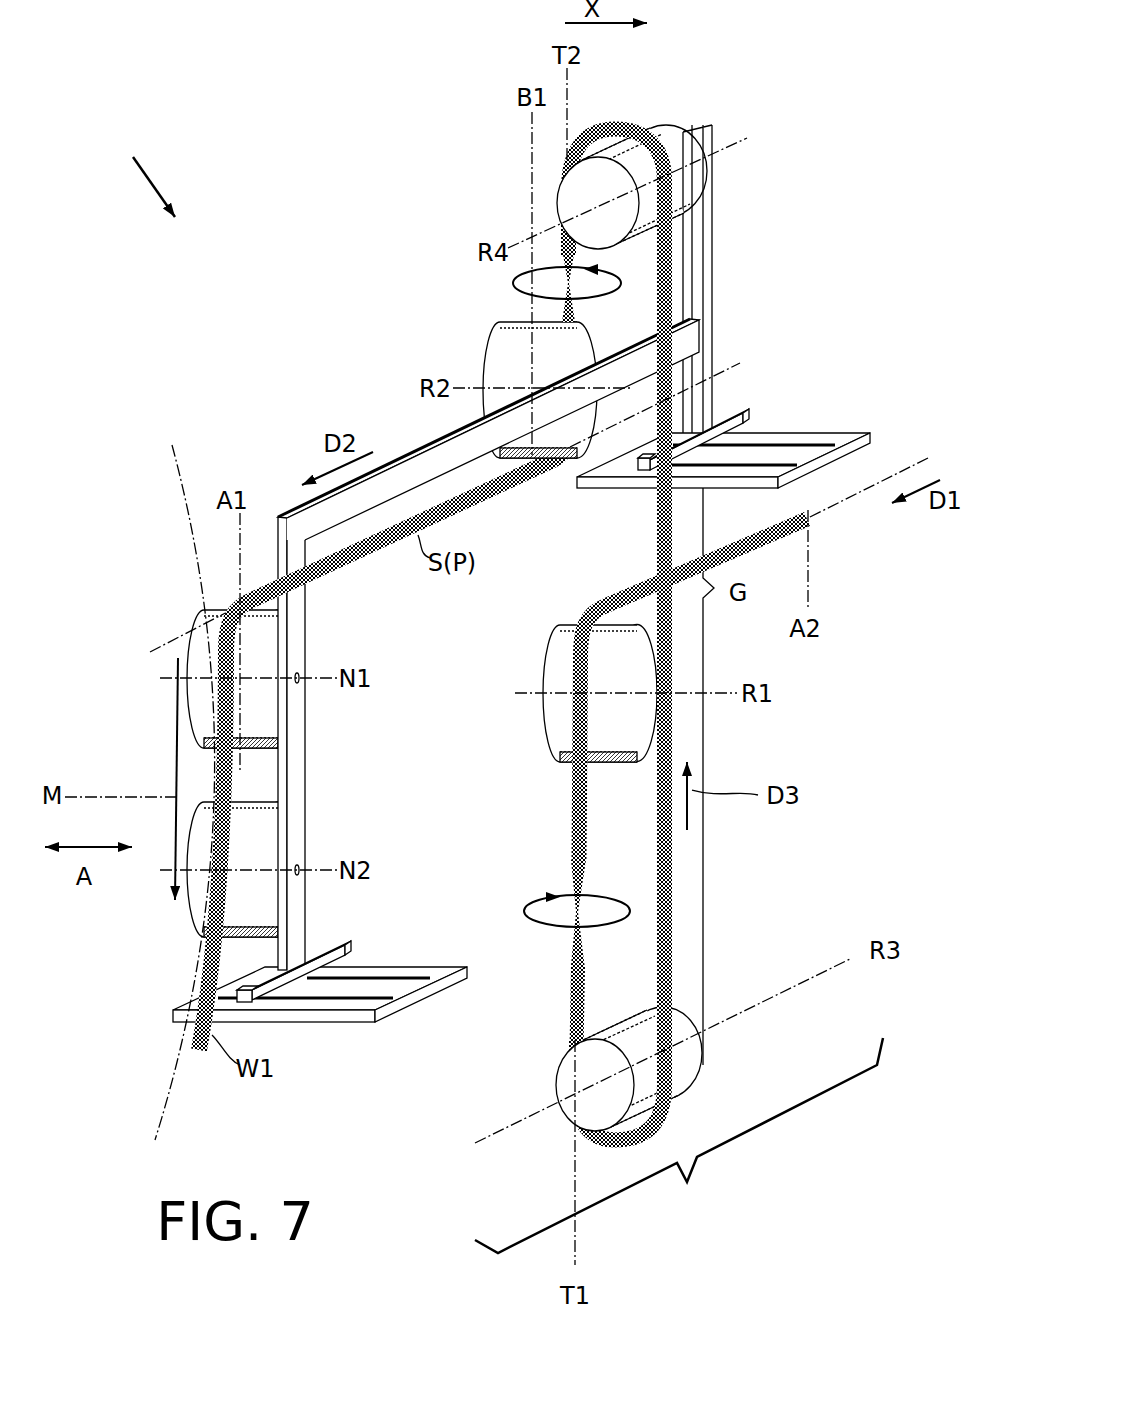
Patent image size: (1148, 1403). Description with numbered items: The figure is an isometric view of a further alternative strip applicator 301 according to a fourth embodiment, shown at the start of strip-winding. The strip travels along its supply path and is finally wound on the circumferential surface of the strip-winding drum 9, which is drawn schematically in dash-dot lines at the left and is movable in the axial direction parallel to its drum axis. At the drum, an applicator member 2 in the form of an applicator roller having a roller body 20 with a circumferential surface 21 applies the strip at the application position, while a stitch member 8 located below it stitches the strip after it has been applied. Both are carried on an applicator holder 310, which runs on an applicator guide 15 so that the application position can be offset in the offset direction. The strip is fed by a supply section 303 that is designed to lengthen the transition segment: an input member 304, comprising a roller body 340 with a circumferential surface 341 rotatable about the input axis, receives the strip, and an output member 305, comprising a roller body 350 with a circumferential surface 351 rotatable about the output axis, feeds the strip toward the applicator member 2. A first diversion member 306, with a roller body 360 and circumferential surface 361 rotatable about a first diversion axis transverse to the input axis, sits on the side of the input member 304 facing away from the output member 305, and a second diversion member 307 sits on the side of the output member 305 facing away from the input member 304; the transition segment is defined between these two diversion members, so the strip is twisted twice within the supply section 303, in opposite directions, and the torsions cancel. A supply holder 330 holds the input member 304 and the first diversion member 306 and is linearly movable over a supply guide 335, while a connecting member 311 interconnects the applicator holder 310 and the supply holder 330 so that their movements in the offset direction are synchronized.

The further alternative strip applicator 301 is at (137, 168).
The supply section 303 is at (679, 1145).
The input member 304 is at (560, 689).
The output member 305 is at (485, 381).
The first diversion member 306 is at (620, 1055).
The second diversion member 307 is at (692, 148).
The applicator holder 310 is at (305, 785).
The connecting member 311 is at (423, 455).
The supply holder 330 is at (712, 243).
The supply guide 335 is at (800, 470).
The roller body 340 is at (553, 722).
The circumferential surface 341 is at (548, 650).
The roller body 350 is at (492, 404).
The circumferential surface 351 is at (487, 340).
The roller body 360 is at (578, 1113).
The circumferential surface 361 is at (680, 1005).
The applicator member 2 is at (195, 640).
The stitch member 8 is at (198, 915).
The strip-winding drum 9 is at (52, 742).
The applicator guide 15 is at (420, 977).
The roller body 20 is at (202, 679).
The circumferential surface 21 is at (185, 688).